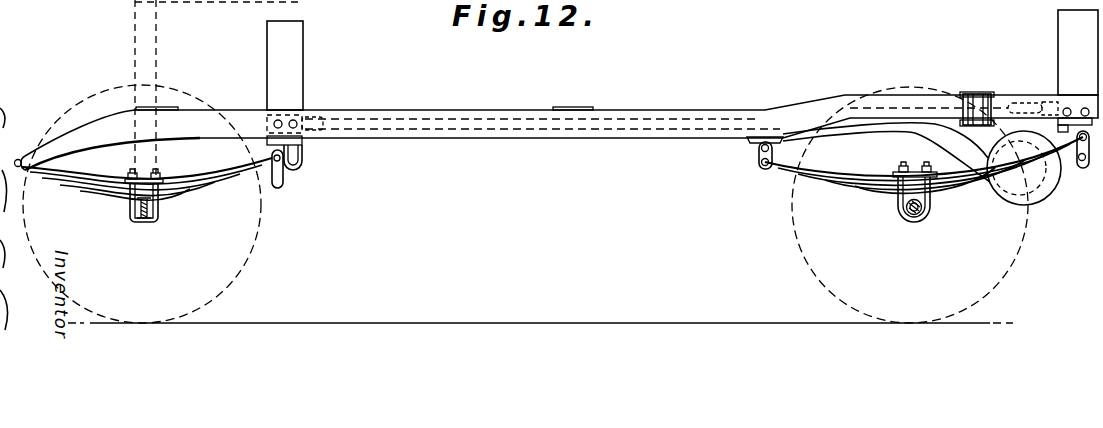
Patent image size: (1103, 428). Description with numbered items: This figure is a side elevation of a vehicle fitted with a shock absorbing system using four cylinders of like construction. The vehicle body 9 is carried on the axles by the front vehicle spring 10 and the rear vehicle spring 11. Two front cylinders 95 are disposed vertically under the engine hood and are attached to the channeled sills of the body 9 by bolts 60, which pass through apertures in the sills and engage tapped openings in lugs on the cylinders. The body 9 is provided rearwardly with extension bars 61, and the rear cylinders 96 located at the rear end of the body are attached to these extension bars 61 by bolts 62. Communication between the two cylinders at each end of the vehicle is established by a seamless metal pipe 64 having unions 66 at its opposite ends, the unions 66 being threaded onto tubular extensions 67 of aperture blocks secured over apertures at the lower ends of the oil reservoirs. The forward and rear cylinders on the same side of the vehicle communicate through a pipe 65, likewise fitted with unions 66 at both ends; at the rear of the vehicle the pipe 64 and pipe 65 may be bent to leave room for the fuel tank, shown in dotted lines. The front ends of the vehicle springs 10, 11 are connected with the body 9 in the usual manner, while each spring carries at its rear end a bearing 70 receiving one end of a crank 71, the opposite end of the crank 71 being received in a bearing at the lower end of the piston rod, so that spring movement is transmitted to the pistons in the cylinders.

The body 9 is at (546, 140).
The front vehicle spring 10 is at (243, 182).
The rear vehicle spring 11 is at (837, 185).
The bolts 60 is at (297, 121).
The extension bars 61 is at (1003, 102).
The bolts 62 is at (1052, 123).
The seamless metal pipe 64 is at (1015, 103).
The pipe 65 is at (860, 134).
The unions 66 is at (303, 163).
The tubular extensions 67 is at (303, 142).
The bearing 70 is at (273, 158).
The crank 71 is at (285, 175).
The front cylinders 95 is at (297, 58).
The rear cylinders 96 is at (1060, 25).